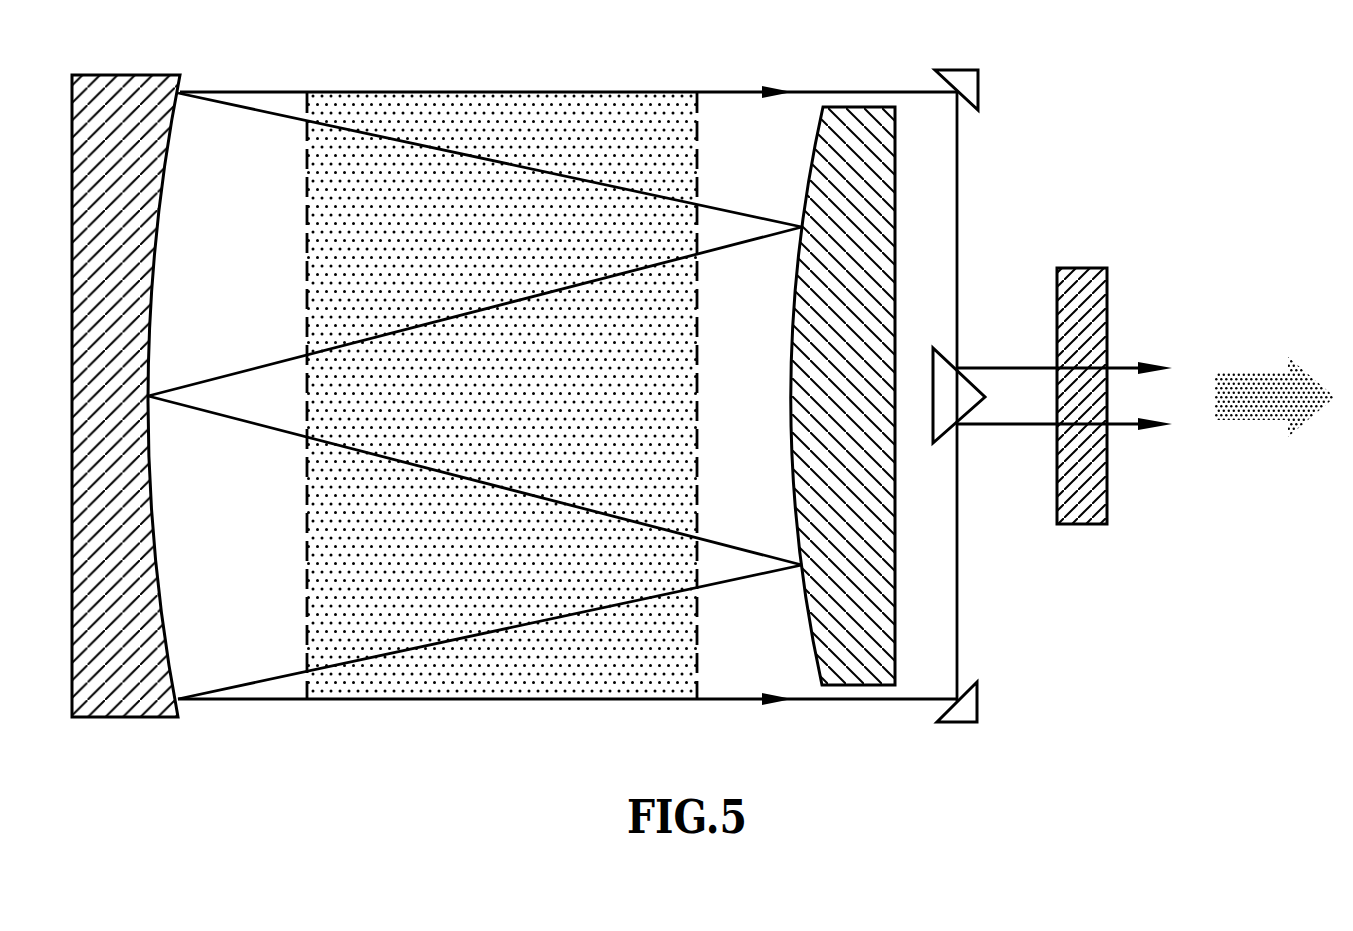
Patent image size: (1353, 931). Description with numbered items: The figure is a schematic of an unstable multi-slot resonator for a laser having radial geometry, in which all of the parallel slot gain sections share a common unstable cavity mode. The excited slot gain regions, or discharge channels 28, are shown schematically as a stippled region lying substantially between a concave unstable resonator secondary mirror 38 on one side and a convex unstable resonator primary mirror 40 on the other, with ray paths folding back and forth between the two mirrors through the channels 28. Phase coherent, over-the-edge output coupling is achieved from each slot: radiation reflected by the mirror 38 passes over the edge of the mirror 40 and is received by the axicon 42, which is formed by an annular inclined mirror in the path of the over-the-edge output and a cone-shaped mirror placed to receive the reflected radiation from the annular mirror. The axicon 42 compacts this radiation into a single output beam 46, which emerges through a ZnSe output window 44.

The discharge channels 28 is at (330, 93).
The concave unstable resonator secondary mirror 38 is at (112, 738).
The convex unstable resonator primary mirror 40 is at (866, 732).
The axicon 42 is at (982, 472).
The ZnSe output window 44 is at (1104, 540).
The output beam 46 is at (1250, 350).